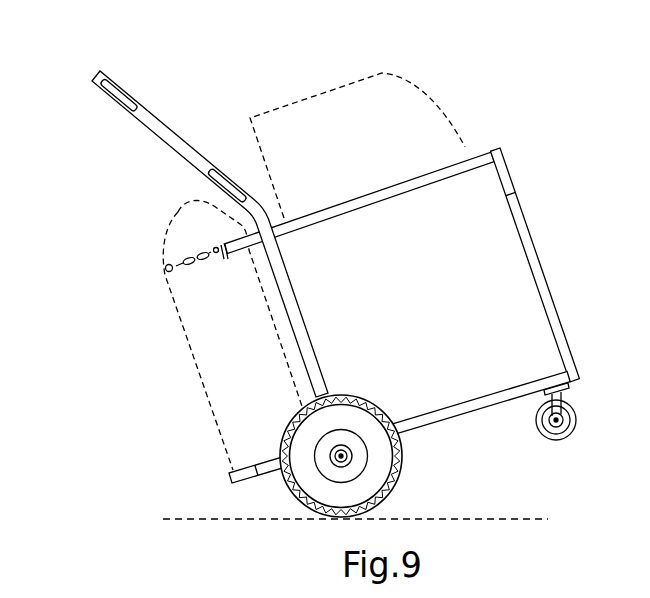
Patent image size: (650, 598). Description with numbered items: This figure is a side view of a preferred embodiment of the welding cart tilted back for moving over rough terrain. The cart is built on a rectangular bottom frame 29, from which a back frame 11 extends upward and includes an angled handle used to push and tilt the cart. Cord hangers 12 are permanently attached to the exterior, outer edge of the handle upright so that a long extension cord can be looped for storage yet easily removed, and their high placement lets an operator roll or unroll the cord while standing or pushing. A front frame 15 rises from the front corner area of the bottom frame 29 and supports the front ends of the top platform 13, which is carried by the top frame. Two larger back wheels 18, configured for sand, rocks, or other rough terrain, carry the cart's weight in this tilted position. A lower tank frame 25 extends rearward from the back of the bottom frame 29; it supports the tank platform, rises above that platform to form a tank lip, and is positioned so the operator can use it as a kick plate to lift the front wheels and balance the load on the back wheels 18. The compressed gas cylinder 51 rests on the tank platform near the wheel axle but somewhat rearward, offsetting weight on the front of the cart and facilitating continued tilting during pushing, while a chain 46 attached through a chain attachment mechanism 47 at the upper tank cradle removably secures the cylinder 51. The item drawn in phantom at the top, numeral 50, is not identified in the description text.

The back frame 11 is at (88, 85).
The cord hangers 12 is at (215, 168).
The top platform 13 is at (412, 194).
The front frame 15 is at (505, 144).
The back wheels 18 is at (404, 466).
The lower tank frame 25 is at (228, 478).
The bottom frame 29 is at (517, 410).
The chain 46 is at (166, 268).
The chain attachment mechanism 47 is at (220, 250).
The load (phantom) 50 is at (413, 86).
The cylinder 51 is at (198, 371).